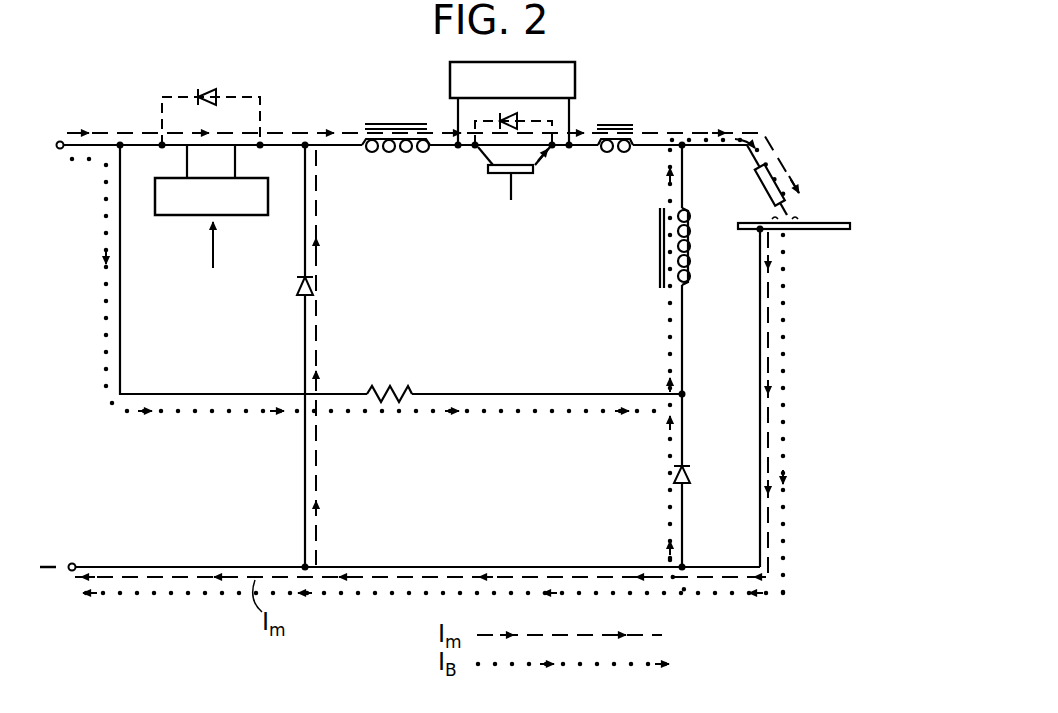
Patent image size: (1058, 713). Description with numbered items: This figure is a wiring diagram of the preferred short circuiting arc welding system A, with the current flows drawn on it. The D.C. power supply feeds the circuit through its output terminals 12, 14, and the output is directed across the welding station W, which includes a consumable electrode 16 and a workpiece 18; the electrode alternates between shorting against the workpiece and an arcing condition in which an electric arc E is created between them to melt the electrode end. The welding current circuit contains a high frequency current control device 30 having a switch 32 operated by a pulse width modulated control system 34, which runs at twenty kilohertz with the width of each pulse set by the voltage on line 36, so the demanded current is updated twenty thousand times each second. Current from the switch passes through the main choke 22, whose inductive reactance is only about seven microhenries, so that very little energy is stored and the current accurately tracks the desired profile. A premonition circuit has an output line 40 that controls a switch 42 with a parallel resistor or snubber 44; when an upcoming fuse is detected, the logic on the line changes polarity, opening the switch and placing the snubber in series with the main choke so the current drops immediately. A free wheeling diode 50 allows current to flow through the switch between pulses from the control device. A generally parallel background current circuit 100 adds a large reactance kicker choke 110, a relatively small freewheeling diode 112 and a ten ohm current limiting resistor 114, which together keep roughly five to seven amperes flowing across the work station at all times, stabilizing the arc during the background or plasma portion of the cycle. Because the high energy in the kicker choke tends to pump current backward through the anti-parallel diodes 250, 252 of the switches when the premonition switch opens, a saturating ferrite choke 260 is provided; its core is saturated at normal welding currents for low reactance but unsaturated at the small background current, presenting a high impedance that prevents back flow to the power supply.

The output terminal 12 is at (59, 150).
The output terminal 14 is at (72, 562).
The high frequency current control device 30 is at (176, 90).
The anti-parallel diode 252 is at (201, 92).
The switch 32 is at (176, 217).
The pulse width modulated control system 34 is at (195, 218).
The line 36 is at (215, 250).
The short circuiting arc welding system A is at (294, 98).
The main choke 22 is at (364, 141).
The snubber 44 is at (450, 80).
The anti-parallel diode 250 is at (510, 117).
The output line 40 is at (510, 203).
The switch 42 is at (524, 174).
The saturating ferrite choke 260 is at (612, 152).
The free wheeling diode 50 is at (315, 290).
The kicker choke 110 is at (690, 275).
The freewheeling diode 112 is at (700, 477).
The current limiting resistor 114 is at (384, 399).
The background current circuit 100 is at (510, 424).
The consumable electrode 16 is at (780, 212).
The workpiece 18 is at (818, 232).
The welding station W is at (791, 165).
The electric arc E is at (809, 207).